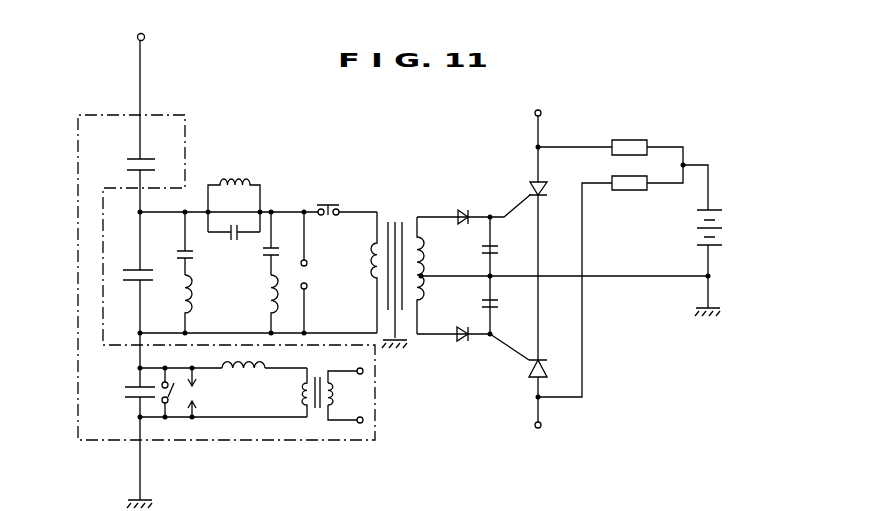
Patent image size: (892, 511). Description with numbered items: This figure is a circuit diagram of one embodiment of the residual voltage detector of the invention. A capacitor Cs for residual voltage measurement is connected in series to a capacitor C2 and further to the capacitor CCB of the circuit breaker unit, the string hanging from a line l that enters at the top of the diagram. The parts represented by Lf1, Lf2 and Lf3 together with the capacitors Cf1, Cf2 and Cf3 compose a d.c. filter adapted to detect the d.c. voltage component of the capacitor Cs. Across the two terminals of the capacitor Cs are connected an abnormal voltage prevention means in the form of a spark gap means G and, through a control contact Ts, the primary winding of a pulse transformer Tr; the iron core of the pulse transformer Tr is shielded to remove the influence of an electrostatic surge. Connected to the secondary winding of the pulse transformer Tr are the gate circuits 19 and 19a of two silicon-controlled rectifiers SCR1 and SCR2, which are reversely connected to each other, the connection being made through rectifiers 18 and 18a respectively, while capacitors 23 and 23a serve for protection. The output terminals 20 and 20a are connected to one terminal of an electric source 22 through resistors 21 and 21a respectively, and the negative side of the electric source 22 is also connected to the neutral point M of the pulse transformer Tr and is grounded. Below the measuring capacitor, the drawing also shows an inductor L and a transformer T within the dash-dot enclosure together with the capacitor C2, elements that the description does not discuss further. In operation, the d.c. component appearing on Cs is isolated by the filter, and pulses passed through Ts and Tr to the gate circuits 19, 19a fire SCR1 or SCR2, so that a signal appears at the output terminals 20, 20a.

The power supply line l is at (144, 34).
The capacitor of the circuit breaker unit CCB is at (125, 163).
The capacitor for residual voltage measurement Cs is at (154, 270).
The d.c. filter capacitor Cf1 is at (194, 254).
The d.c. filter capacitor Cf2 is at (233, 243).
The d.c. filter capacitor Cf3 is at (277, 248).
The d.c. filter part Lf1 is at (235, 180).
The d.c. filter part Lf2 is at (188, 305).
The d.c. filter part Lf3 is at (275, 295).
The spark gap means G is at (315, 272).
The control contact Ts is at (347, 198).
The pulse transformer Tr is at (398, 218).
The neutral point of the pulse transformer M is at (423, 270).
The rectifier 18 is at (460, 208).
The rectifier 18a is at (458, 343).
The capacitor for protection 23 is at (483, 247).
The capacitor for protection 23a is at (483, 300).
The gate circuit 19 is at (520, 207).
The gate circuit 19a is at (515, 349).
The silicon-controlled rectifier SCR1 is at (530, 189).
The silicon-controlled rectifier SCR2 is at (527, 375).
The output terminal 20 is at (541, 110).
The output terminal 20a is at (541, 428).
The resistor 21 is at (632, 140).
The resistor 21a is at (625, 191).
The electric source 22 is at (694, 218).
The capacitor C2 is at (122, 388).
The inductor L is at (245, 378).
The transformer T is at (332, 386).